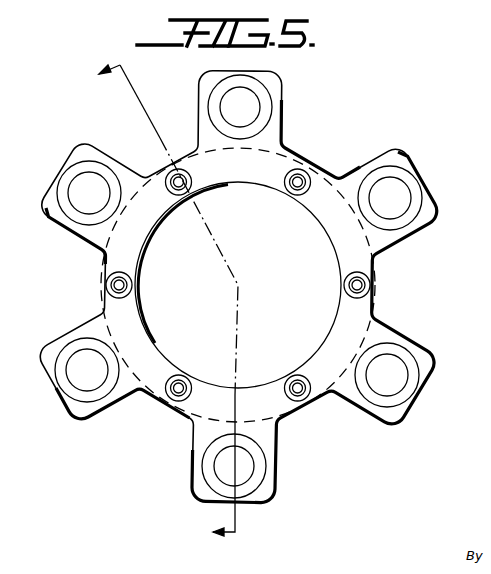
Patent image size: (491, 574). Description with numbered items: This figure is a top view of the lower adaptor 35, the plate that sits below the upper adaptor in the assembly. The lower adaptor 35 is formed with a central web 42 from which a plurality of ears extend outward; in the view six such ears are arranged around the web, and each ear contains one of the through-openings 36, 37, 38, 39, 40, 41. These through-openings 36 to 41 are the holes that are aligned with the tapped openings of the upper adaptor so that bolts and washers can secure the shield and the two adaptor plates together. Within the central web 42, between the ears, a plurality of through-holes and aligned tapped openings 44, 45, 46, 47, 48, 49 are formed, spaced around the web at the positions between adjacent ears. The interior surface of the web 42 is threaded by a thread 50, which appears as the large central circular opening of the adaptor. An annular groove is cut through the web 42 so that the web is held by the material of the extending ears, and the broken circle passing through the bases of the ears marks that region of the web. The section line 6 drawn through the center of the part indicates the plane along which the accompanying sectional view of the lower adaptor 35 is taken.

The section line 6- 6 is at (159, 303).
The lower adaptor 35 is at (348, 157).
The through-opening 36 is at (246, 472).
The through-opening 37 is at (94, 388).
The through-opening 38 is at (86, 205).
The through-opening 39 is at (258, 109).
The through-opening 40 is at (407, 199).
The through-opening 41 is at (385, 392).
The central web 42 is at (294, 139).
The through-hole and aligned tapped opening 44 is at (185, 187).
The through-hole and aligned tapped opening 45 is at (295, 195).
The through-hole and aligned tapped opening 46 is at (345, 289).
The through-hole and aligned tapped opening 47 is at (296, 376).
The through-hole and aligned tapped opening 48 is at (184, 376).
The through-hole and aligned tapped opening 49 is at (132, 283).
The thread 50 is at (157, 341).